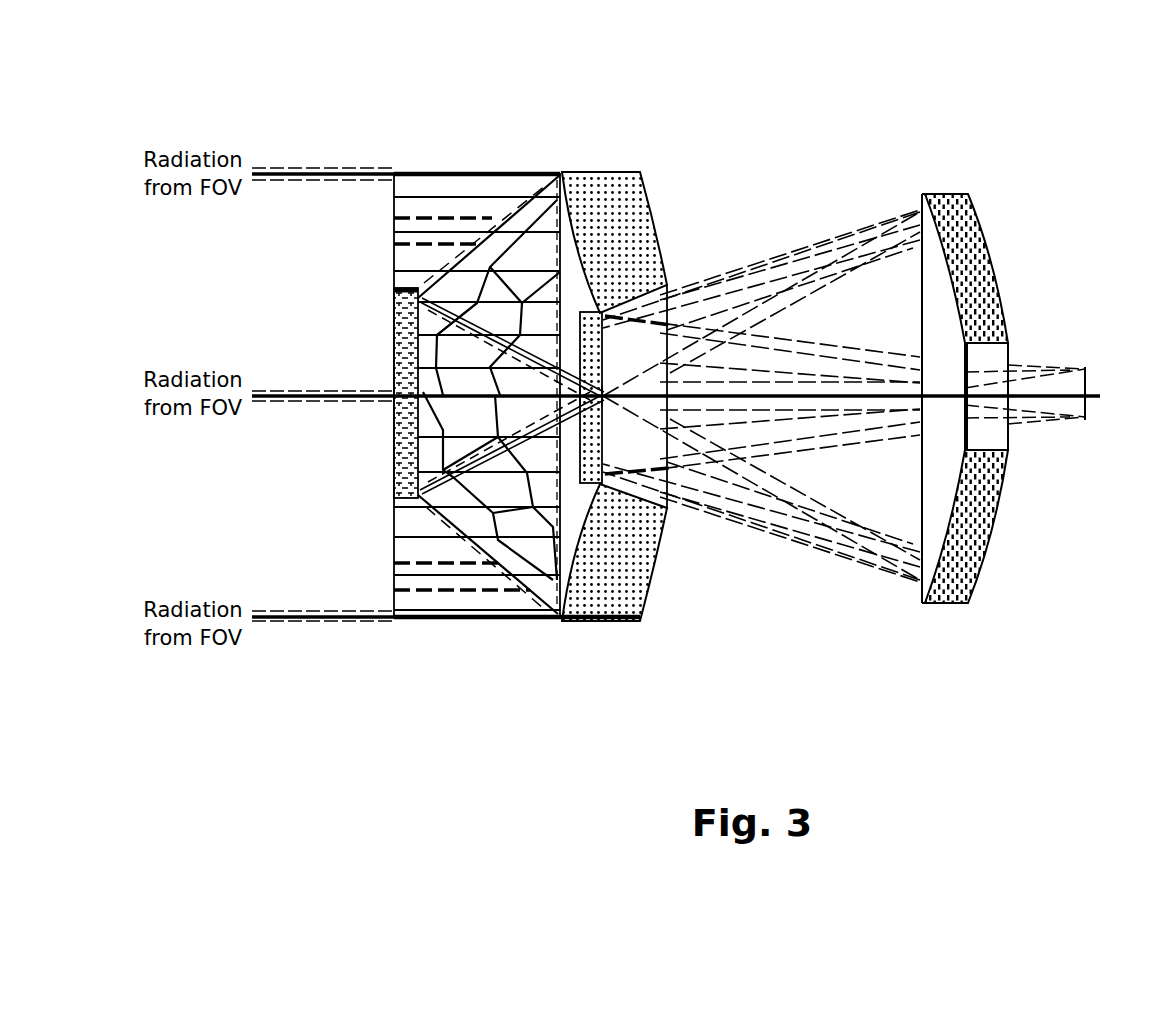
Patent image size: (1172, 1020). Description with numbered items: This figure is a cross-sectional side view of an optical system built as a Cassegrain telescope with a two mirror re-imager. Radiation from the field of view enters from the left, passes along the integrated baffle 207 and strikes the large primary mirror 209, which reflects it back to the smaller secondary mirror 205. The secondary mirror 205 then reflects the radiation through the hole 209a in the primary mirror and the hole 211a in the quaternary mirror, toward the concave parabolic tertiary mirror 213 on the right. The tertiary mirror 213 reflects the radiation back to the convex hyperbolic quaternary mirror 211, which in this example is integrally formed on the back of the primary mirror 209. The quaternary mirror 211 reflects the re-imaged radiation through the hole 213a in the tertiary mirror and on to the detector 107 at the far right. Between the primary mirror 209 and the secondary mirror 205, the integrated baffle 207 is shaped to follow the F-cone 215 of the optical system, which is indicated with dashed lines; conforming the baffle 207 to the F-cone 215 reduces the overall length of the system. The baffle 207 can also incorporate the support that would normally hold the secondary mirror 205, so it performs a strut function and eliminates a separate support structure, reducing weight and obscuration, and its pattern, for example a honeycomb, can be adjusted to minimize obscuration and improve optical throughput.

The detector 107 is at (1068, 371).
The secondary mirror 205 is at (327, 366).
The integrated baffle 207 is at (392, 557).
The primary mirror 209 is at (594, 337).
The hole in primary mirror 209a is at (649, 495).
The quaternary mirror 211 is at (672, 268).
The hole in quaternary mirror 211a is at (633, 560).
The tertiary mirror 213 is at (985, 334).
The hole in tertiary mirror 213a is at (915, 424).
The F-cone 215 is at (484, 349).